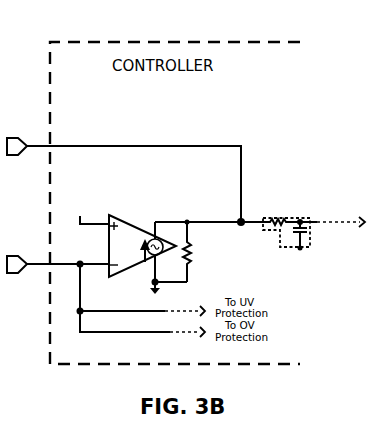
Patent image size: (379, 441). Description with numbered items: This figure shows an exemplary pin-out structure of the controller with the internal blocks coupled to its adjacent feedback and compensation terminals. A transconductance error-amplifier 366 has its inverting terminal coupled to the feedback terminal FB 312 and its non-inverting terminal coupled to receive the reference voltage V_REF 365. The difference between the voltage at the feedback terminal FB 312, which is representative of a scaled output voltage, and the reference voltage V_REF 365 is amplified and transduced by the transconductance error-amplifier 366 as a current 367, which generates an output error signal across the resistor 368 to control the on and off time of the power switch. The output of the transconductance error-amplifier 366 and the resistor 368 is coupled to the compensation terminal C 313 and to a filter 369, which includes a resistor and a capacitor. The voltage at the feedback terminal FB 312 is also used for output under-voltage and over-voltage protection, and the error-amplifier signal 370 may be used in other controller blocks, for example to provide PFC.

The feedback terminal FB 312 is at (22, 253).
The compensation terminal C 313 is at (22, 133).
The reference voltage V_REF 365 is at (74, 203).
The transconductance error-amplifier 366 is at (129, 215).
The current 367 is at (163, 243).
The resistor 368 is at (195, 248).
The filter 369 is at (288, 187).
The error-amplifier signal 370 is at (350, 244).